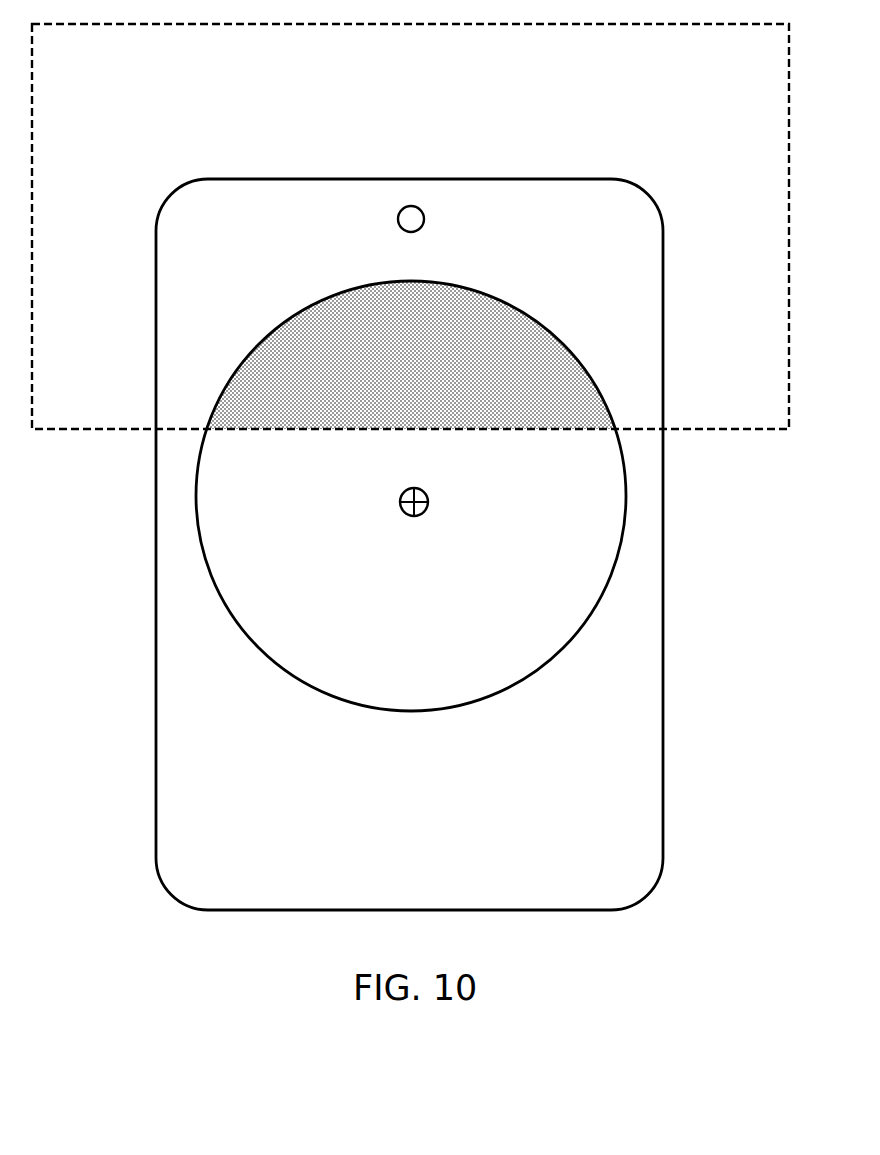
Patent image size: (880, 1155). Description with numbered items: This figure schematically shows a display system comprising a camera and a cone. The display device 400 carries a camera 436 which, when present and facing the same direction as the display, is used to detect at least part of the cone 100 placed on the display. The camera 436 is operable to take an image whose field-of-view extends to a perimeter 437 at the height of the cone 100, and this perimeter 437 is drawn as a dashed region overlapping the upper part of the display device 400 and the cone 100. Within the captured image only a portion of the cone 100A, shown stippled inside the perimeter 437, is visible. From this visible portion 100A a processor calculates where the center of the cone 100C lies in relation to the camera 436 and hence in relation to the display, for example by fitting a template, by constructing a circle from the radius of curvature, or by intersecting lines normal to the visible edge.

The perimeter 437 is at (779, 67).
The display device 400 is at (615, 878).
The cone 100 is at (632, 562).
The portion of the cone 100A is at (624, 390).
The center of the cone 100C is at (450, 503).
The camera 436 is at (438, 221).